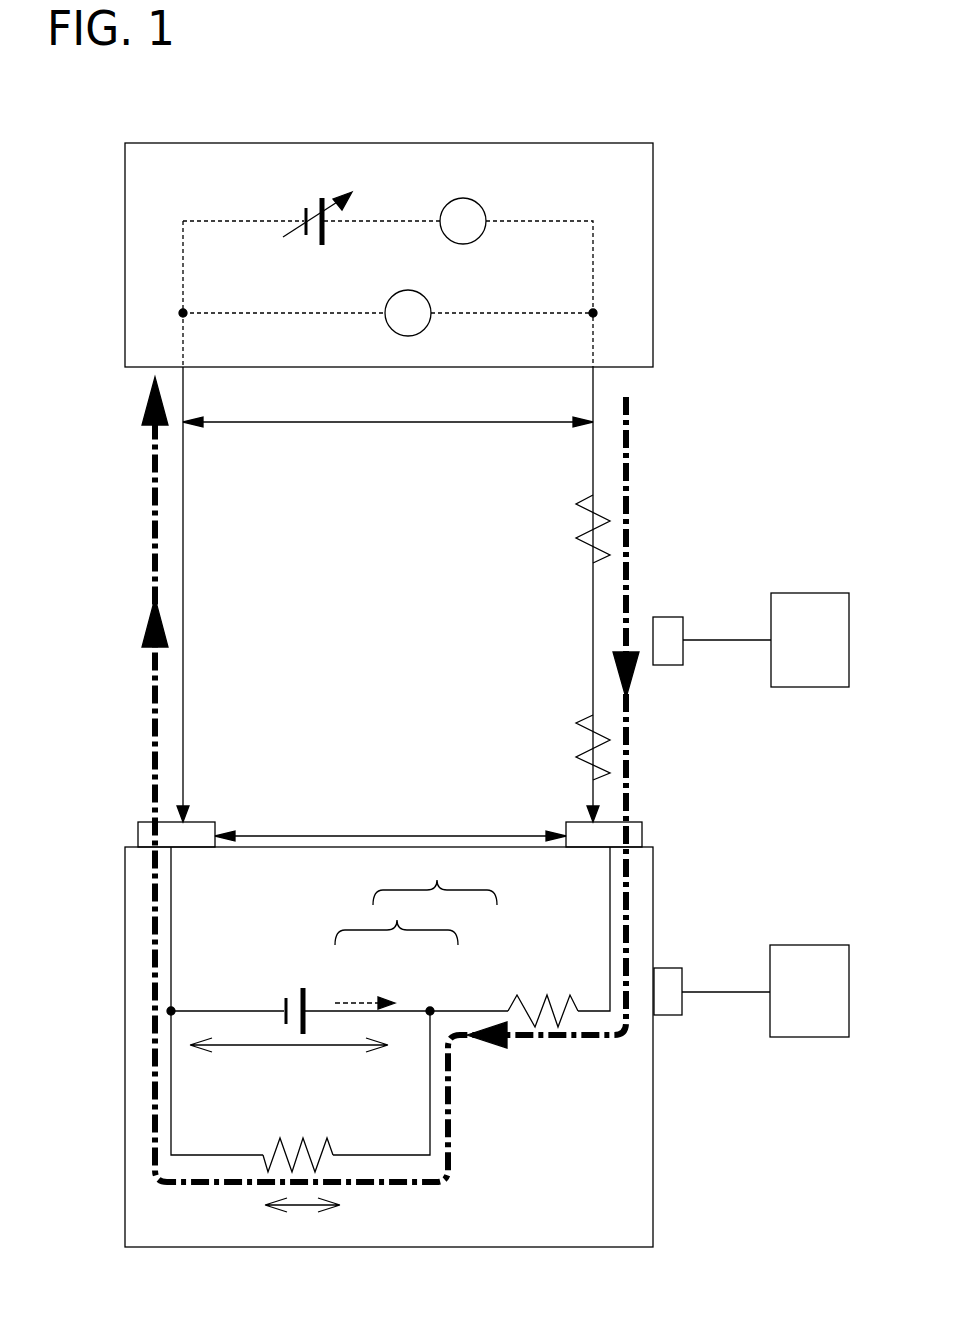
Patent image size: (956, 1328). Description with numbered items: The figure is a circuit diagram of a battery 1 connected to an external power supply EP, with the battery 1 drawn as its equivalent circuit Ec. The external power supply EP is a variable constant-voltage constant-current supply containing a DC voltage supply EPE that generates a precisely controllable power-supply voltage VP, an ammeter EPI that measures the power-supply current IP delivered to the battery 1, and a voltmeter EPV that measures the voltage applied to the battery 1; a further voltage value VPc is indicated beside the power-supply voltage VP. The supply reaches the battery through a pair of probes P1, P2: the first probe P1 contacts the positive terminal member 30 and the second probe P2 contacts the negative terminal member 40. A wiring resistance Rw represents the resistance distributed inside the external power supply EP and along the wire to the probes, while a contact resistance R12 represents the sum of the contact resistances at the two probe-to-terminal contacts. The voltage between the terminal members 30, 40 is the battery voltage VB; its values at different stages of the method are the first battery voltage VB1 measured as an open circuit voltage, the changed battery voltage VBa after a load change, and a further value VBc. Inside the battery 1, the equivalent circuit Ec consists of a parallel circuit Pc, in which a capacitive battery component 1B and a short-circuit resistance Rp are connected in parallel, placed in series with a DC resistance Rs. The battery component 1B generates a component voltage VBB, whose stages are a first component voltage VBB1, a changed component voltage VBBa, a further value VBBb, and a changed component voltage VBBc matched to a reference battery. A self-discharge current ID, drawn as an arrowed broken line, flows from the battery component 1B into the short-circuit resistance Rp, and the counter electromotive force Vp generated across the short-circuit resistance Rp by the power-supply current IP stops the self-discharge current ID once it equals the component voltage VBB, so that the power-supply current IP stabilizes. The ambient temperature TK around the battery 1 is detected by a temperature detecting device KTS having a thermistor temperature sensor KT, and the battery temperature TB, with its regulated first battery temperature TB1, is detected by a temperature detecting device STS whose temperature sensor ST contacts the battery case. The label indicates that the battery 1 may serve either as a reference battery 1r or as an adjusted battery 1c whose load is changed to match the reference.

The external power supply EP is at (653, 275).
The DC voltage supply EPE is at (312, 212).
The ammeter EPI is at (480, 205).
The voltmeter EPV is at (422, 299).
The power-supply voltage VP is at (388, 435).
The charging power supply voltage VPc is at (388, 435).
The power-supply current IP is at (632, 490).
The wiring resistance Rw is at (585, 508).
The contact resistance R12 is at (585, 733).
The temperature sensor KT is at (665, 617).
The ambient temperature TK is at (727, 623).
The temperature detecting device KTS is at (803, 593).
The probe P2 is at (138, 836).
The negative terminal member 40 is at (146, 806).
The probe P1 is at (642, 836).
The positive terminal member 30 is at (635, 806).
The battery voltage VB is at (390, 824).
The first battery voltage VB1 is at (390, 824).
The changed battery voltage VBa is at (390, 824).
The battery terminal voltage variant VBc is at (390, 824).
The battery 1 is at (451, 1047).
The reference battery 1r is at (451, 1047).
The adjusted battery 1c is at (654, 1190).
The equivalent circuit Ec is at (435, 878).
The parallel circuit Pc is at (396, 919).
The battery component 1B is at (297, 994).
The DC resistance Rs is at (532, 996).
The short-circuit resistance Rp is at (313, 1148).
The self-discharge current ID is at (365, 990).
The component voltage VBB is at (308, 1073).
The first component voltage VBB1 is at (308, 1073).
The changed component voltage VBBa is at (308, 1073).
The cell voltage variant VBBb is at (308, 1073).
The changed component voltage VBBc is at (308, 1073).
The counter electromotive force Vp is at (302, 1219).
The temperature sensor ST is at (675, 1015).
The battery temperature TB is at (729, 975).
The first battery temperature TB1 is at (729, 975).
The temperature detecting device STS is at (805, 945).